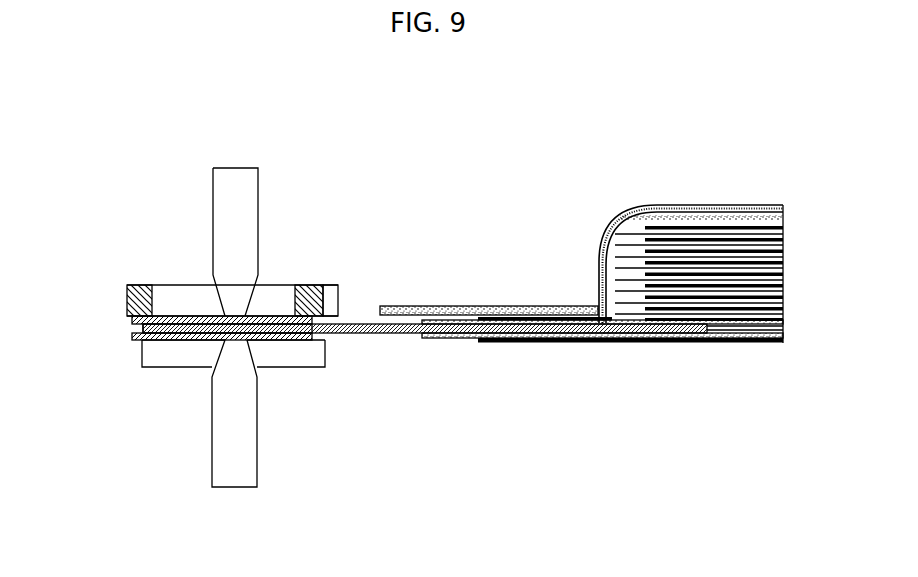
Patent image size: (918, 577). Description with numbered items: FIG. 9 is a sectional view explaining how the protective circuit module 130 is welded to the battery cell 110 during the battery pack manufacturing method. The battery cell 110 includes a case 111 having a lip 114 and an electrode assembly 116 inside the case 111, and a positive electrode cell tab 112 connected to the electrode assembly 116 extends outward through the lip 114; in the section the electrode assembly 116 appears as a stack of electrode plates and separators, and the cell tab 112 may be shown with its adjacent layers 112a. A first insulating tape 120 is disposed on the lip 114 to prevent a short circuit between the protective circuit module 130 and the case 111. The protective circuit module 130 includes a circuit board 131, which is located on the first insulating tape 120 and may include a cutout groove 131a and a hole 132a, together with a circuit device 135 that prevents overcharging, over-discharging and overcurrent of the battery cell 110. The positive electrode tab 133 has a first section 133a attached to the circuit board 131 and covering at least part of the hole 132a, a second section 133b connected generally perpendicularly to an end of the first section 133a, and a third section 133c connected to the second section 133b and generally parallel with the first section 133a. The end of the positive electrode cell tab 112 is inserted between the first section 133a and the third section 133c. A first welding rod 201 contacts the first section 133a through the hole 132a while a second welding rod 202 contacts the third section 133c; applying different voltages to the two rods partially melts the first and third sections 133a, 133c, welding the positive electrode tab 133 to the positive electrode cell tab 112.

The battery cell 110 is at (78, 70).
The case 111 is at (733, 207).
The positive electrode cell tab 112 is at (360, 335).
The coating layer of electrode plate 112a is at (432, 338).
The lip 114 is at (569, 342).
The electrode assembly 116 is at (783, 228).
The first insulating tape 120 is at (450, 306).
The protective circuit module 130 is at (123, 283).
The circuit board 131 is at (140, 288).
The cutout groove 131a is at (330, 286).
The hole 132a is at (285, 290).
The positive electrode tab 133 is at (55, 293).
The first section 133a is at (135, 318).
The second section 133b is at (140, 328).
The third section 133c is at (150, 342).
The circuit device 135 is at (169, 368).
The first welding rod 201 is at (235, 172).
The second welding rod 202 is at (232, 478).